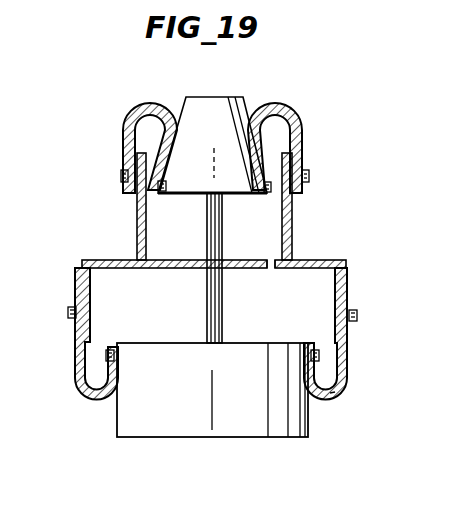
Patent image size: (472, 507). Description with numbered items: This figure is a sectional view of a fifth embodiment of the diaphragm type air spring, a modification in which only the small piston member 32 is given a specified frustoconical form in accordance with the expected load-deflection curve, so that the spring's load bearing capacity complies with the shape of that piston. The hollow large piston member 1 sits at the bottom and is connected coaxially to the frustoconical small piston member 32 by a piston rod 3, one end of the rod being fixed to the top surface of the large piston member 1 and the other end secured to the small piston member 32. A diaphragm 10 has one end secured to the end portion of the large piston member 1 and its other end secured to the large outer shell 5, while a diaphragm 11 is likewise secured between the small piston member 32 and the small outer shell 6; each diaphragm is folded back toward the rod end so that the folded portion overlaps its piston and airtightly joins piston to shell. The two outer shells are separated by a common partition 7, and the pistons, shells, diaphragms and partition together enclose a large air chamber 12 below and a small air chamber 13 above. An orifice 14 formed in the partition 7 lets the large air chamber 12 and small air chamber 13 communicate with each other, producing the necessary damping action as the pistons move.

The large piston member 1 is at (162, 428).
The piston rod 3 is at (206, 226).
The large outer shell 5 is at (347, 268).
The small outer shell 6 is at (137, 196).
The common partition 7 is at (160, 272).
The diaphragm 10 is at (349, 386).
The diaphragm 11 is at (302, 133).
The large air chamber 12 is at (296, 304).
The small air chamber 13 is at (258, 214).
The orifice 14 is at (270, 260).
The small piston member 32 is at (247, 98).